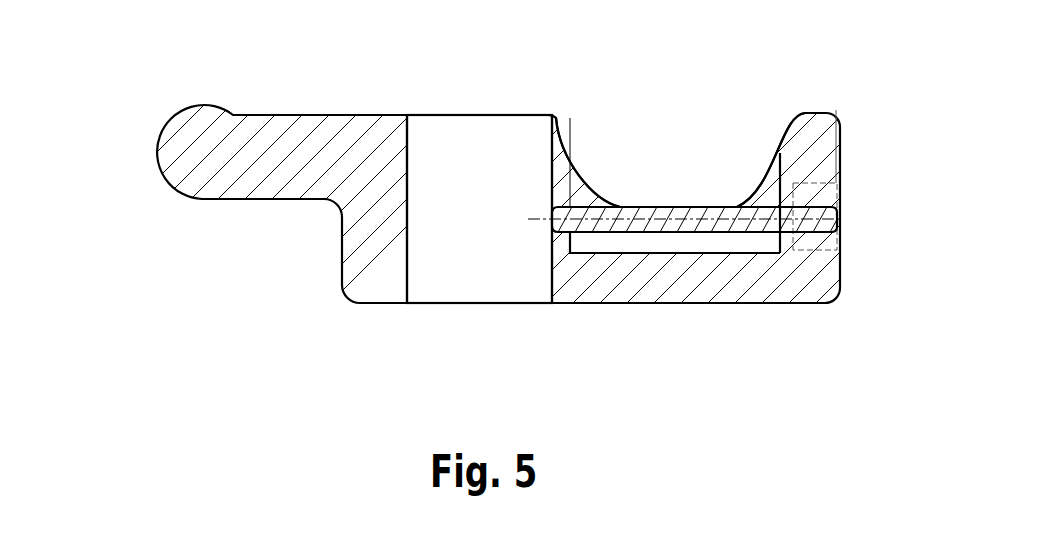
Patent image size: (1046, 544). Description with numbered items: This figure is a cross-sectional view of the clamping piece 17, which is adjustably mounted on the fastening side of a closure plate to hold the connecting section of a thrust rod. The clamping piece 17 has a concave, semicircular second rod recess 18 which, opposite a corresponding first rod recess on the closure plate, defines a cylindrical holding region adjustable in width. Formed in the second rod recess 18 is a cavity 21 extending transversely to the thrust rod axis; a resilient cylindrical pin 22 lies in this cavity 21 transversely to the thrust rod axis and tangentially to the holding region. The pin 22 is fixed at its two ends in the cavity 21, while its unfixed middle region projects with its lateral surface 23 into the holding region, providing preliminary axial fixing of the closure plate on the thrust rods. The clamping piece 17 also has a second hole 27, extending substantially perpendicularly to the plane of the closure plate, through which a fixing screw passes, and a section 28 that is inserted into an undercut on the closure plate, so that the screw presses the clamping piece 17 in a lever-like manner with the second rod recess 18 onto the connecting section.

The clamping piece 17 is at (138, 68).
The second rod recess 18 is at (707, 153).
The cavity 21 is at (624, 243).
The resilient cylindrical pin 22 is at (737, 223).
The lateral surface 23 is at (653, 202).
The second hole 27 is at (475, 243).
The section 28 is at (252, 155).